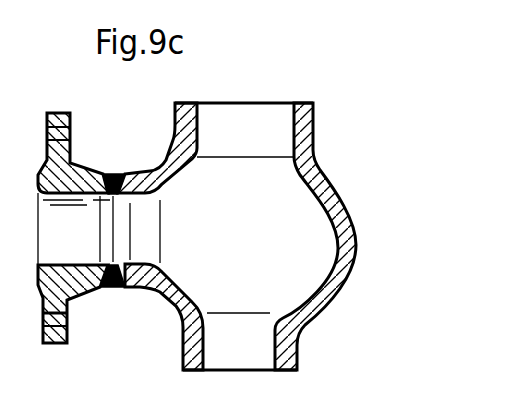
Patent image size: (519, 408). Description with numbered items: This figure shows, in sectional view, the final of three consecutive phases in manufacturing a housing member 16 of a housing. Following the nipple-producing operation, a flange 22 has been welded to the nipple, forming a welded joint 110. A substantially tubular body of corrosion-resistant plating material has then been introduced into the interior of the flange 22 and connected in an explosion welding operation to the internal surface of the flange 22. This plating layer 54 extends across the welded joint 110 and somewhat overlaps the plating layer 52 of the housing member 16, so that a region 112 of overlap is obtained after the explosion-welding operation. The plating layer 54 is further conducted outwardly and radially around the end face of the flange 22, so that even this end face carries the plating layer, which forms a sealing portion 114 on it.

The housing member 16 is at (331, 169).
The flange 22 is at (67, 302).
The plating layer 52 is at (170, 278).
The plating layer 54 is at (67, 264).
The welded joint 110 is at (117, 174).
The region of overlap 112 is at (123, 206).
The sealing portion 114 is at (39, 176).